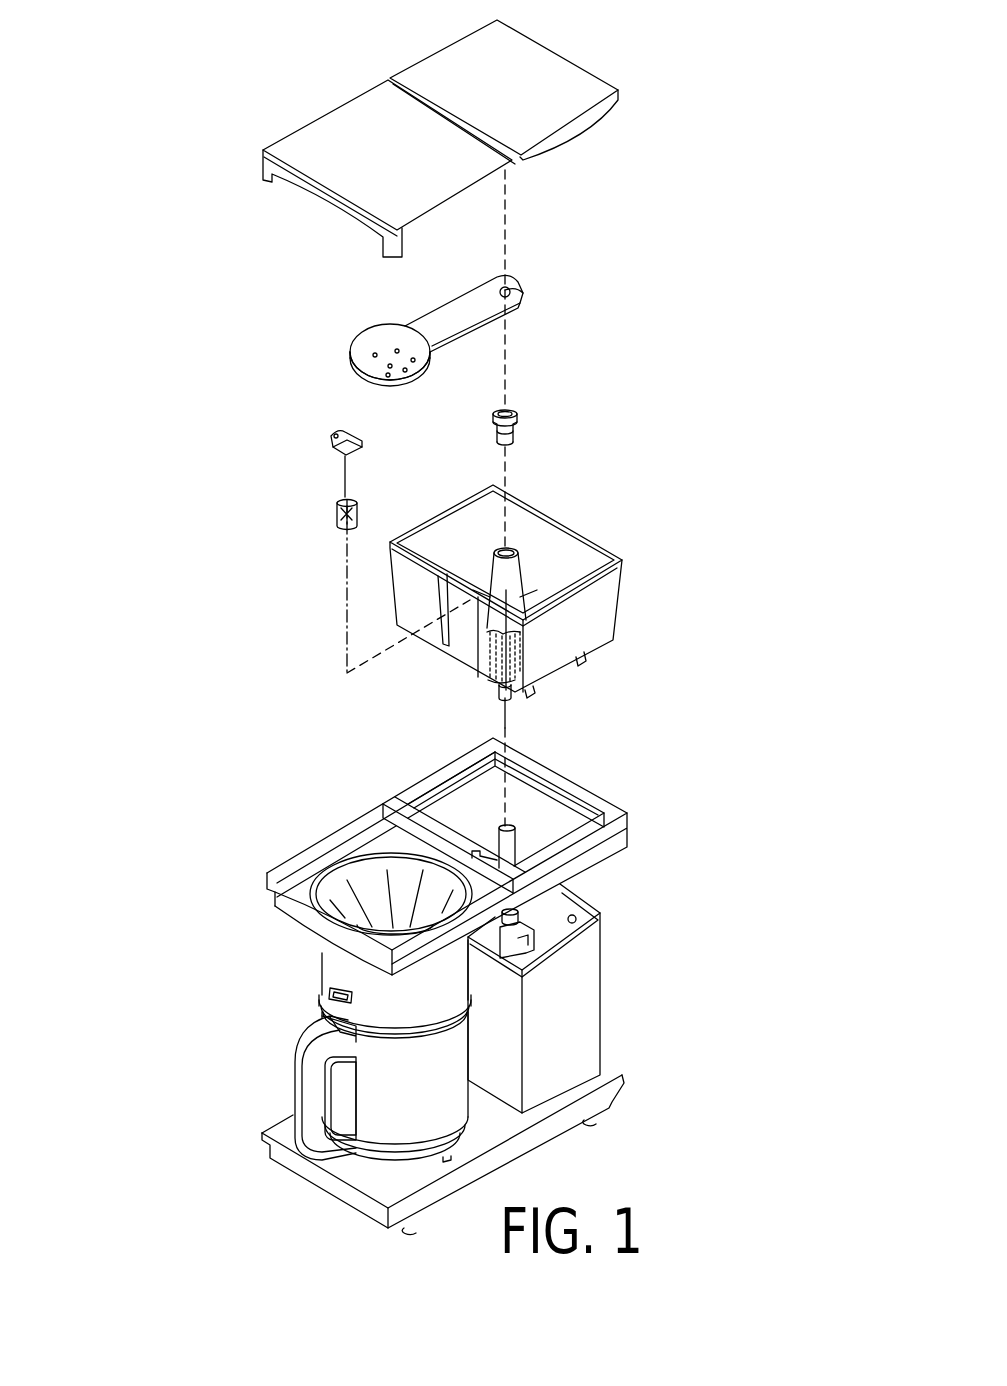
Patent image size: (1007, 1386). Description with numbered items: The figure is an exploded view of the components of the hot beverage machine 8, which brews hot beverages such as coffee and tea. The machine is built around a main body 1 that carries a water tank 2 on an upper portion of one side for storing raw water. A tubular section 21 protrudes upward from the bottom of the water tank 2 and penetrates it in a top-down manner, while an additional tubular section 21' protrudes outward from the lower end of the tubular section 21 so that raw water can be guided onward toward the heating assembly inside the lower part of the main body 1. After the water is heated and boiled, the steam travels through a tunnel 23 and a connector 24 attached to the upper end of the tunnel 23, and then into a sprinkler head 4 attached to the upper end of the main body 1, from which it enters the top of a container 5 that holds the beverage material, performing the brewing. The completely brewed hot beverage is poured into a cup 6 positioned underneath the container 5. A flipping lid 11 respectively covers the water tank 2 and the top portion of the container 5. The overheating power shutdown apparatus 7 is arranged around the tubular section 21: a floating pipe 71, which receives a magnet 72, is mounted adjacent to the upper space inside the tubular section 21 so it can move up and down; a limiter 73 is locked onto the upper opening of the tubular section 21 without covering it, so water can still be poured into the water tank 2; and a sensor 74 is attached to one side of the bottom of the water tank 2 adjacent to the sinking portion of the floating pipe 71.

The main body 1 is at (580, 1025).
The water tank 2 is at (545, 522).
The sprinkler head 4 is at (385, 340).
The container 5 is at (363, 875).
The cup 6 is at (385, 1087).
The overheating power shutdown apparatus 7 is at (202, 558).
The hot beverage machine 8 is at (272, 661).
The flipping lid 11 is at (320, 140).
The tubular section 21 is at (560, 672).
The additional tubular section 21' is at (448, 701).
The tunnel 23 is at (510, 573).
The connector 24 is at (520, 426).
The floating pipe 71 is at (337, 513).
The magnet 72 is at (357, 530).
The limiter 73 is at (336, 446).
The sensor 74 is at (540, 927).